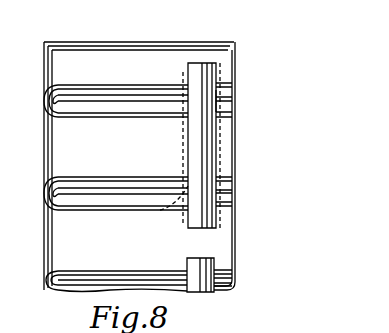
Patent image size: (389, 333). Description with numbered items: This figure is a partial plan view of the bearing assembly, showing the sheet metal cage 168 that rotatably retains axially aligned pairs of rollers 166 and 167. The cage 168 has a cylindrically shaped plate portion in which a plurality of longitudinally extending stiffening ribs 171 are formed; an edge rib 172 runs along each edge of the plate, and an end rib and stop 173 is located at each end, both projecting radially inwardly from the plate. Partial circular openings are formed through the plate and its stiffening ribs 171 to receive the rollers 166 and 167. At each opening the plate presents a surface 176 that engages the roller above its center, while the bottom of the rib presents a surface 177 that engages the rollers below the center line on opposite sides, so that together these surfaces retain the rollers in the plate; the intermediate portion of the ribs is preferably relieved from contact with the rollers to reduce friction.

The roller 166 is at (198, 88).
The roller 167 is at (196, 272).
The cage 168 is at (223, 54).
The stiffening rib 171 is at (136, 183).
The edge rib 172 is at (97, 46).
The end rib and stop 173 is at (47, 112).
The surface 176 is at (184, 140).
The surface 177 is at (172, 211).